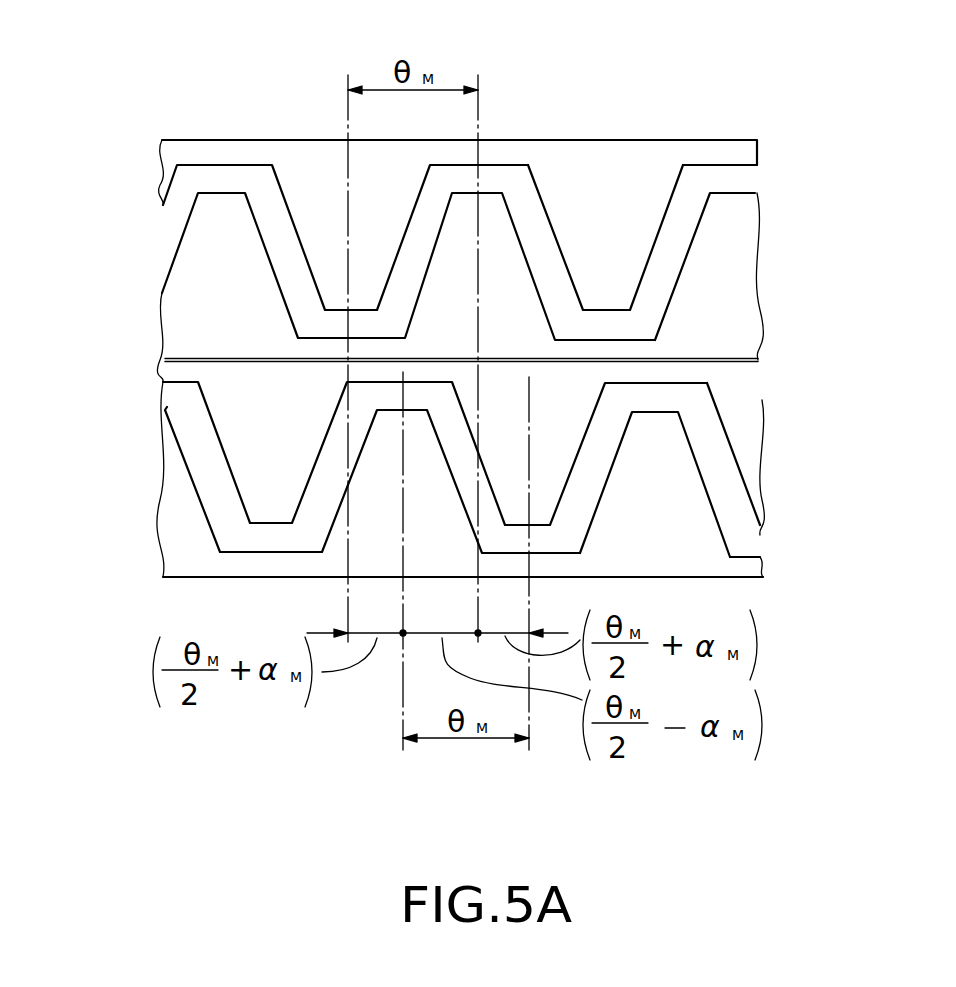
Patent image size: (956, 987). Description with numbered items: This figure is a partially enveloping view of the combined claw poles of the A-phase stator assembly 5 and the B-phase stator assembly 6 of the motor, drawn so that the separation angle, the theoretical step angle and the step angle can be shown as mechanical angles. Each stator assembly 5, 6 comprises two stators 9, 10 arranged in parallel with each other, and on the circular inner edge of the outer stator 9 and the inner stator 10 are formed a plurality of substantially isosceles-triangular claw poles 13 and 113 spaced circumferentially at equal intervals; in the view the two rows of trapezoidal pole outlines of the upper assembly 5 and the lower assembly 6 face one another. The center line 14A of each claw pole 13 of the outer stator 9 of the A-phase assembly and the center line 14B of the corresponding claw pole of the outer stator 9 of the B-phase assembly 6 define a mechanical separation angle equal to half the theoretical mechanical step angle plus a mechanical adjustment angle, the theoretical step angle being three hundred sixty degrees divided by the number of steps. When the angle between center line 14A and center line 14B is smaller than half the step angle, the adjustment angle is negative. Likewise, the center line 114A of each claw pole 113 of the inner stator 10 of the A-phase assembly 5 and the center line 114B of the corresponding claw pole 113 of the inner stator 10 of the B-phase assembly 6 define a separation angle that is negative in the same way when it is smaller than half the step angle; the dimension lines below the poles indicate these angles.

The A-phase stator assembly 5 is at (155, 247).
The B-phase stator assembly 6 is at (148, 453).
The stator 9 is at (195, 147).
The stator 10 is at (193, 340).
The claw pole 13 is at (613, 203).
The center line of claw pole of A-phase outer stator 14A is at (345, 117).
The center line of claw pole of B-phase outer stator 14B is at (407, 398).
The claw pole 113 is at (720, 285).
The center line of claw pole of A-phase inner stator 114A is at (480, 117).
The center line of claw pole of B-phase inner stator 114B is at (533, 505).